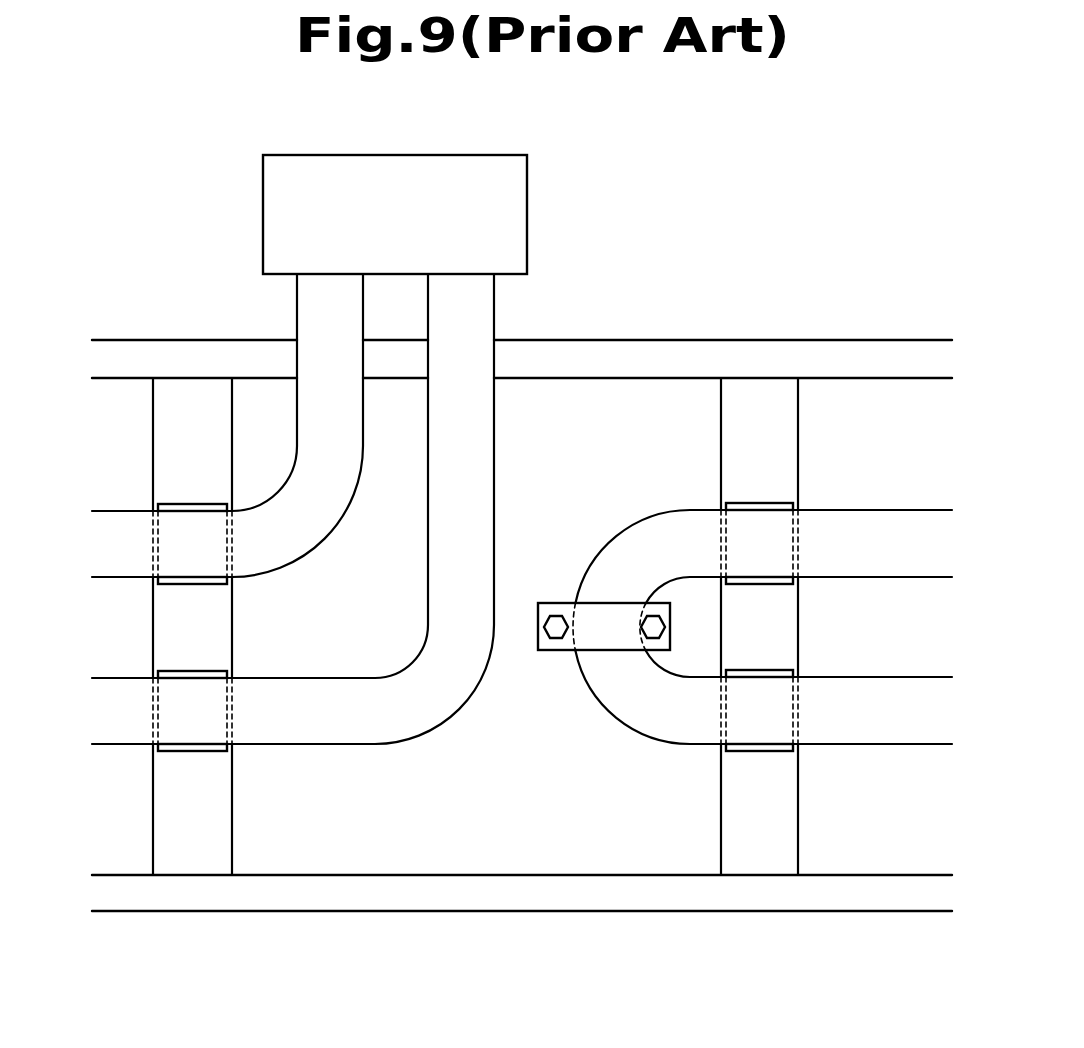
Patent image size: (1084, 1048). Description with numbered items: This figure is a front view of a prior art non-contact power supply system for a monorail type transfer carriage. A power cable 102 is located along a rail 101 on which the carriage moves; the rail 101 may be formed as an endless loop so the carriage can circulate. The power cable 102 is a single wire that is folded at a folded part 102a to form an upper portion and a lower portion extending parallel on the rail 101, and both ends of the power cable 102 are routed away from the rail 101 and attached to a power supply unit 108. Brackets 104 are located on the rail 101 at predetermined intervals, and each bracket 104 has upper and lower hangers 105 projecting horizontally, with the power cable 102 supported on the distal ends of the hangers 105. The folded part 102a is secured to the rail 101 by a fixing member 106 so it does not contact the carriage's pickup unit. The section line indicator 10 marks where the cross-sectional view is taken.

The section line indicator 10 is at (758, 330).
The rail 101 is at (873, 358).
The power cable 102 is at (761, 610).
The folded part 102a is at (618, 546).
The bracket 104 is at (765, 421).
The hanger 105 is at (191, 505).
The fixing member 106 is at (546, 654).
The power supply unit 108 is at (503, 207).